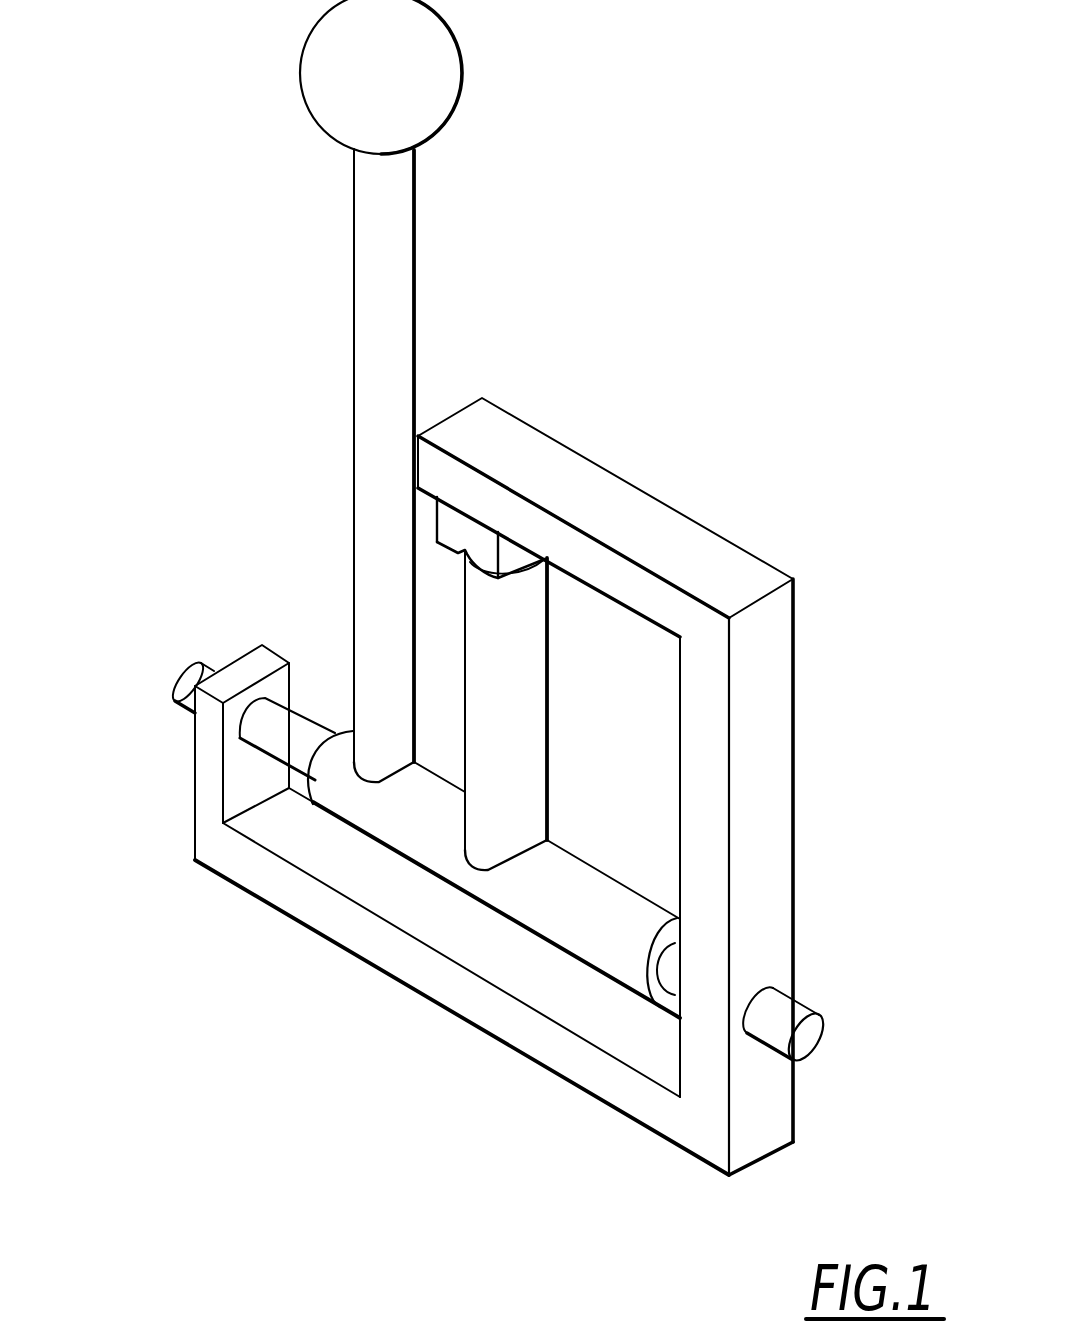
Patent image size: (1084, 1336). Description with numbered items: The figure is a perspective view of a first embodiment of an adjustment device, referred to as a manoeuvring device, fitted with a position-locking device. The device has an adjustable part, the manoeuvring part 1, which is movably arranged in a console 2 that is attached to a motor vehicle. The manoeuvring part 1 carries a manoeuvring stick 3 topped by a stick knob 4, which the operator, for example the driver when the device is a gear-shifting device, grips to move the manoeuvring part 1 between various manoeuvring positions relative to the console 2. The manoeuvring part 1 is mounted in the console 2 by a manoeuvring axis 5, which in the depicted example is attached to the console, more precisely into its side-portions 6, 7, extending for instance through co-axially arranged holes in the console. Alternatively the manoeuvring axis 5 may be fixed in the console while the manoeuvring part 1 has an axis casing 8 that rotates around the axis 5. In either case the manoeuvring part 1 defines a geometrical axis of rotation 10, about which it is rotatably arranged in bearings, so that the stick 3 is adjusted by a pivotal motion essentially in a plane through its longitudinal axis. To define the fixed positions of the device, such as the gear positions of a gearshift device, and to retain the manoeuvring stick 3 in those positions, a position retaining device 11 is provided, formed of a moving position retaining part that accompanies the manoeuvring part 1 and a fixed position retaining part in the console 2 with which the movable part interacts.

The manoeuvring part 1 is at (280, 517).
The console 2 is at (562, 786).
The manoeuvring stick 3 is at (398, 258).
The stick knob 4 is at (443, 83).
The manoeuvring axis 5 is at (935, 1112).
The side-portion 6 is at (208, 763).
The side-portion 7 is at (768, 1125).
The axis casing 8 is at (607, 910).
The geometrical axis of rotation 10 is at (83, 617).
The position retaining device 11 is at (565, 722).